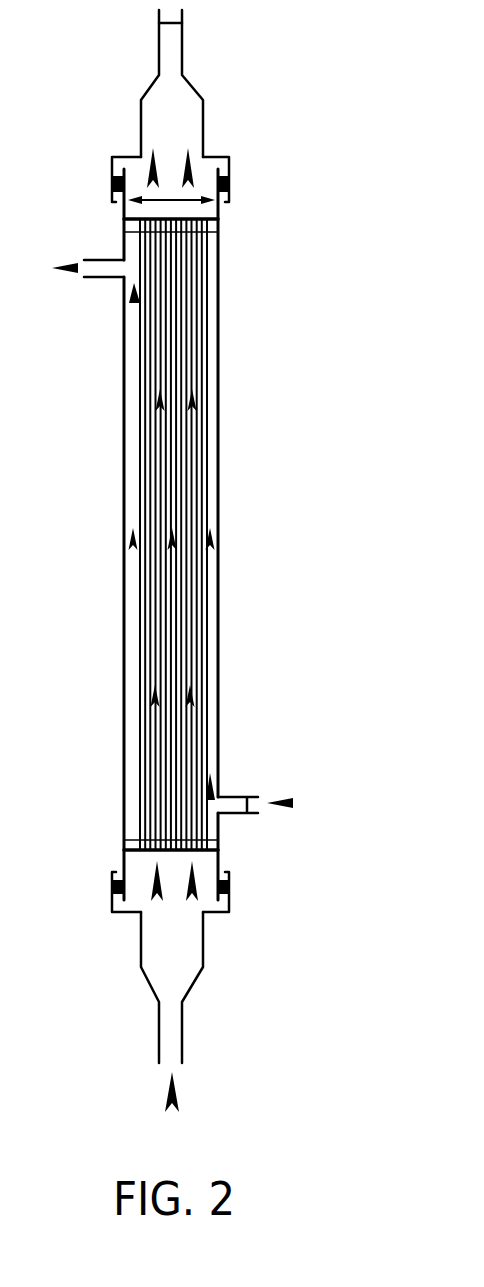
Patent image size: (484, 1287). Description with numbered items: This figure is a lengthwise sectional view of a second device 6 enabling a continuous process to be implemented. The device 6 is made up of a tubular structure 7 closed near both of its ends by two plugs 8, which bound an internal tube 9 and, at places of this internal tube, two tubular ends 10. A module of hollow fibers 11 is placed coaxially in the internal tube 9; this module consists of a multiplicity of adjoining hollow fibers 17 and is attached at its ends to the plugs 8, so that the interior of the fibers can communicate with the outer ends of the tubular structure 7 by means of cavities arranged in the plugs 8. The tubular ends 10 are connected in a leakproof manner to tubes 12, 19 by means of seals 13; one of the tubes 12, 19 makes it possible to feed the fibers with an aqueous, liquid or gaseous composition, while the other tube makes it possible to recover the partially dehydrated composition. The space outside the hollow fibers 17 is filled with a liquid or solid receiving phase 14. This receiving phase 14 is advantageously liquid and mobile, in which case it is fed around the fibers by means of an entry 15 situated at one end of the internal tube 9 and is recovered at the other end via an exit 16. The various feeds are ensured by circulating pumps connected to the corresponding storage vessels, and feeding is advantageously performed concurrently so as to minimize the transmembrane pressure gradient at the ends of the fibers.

The device 6 is at (250, 358).
The tubular structure 7 is at (220, 422).
The plugs 8 is at (215, 223).
The internal tube 9 is at (210, 298).
The tubular ends 10 is at (137, 213).
The module of hollow fibers 11 is at (177, 630).
The tube 12 is at (202, 960).
The seals 13 is at (232, 888).
The receiving phase 14 is at (203, 708).
The entry 15 is at (238, 797).
The exit 16 is at (110, 277).
The hollow fibers 17 is at (177, 483).
The tube 19 is at (203, 130).